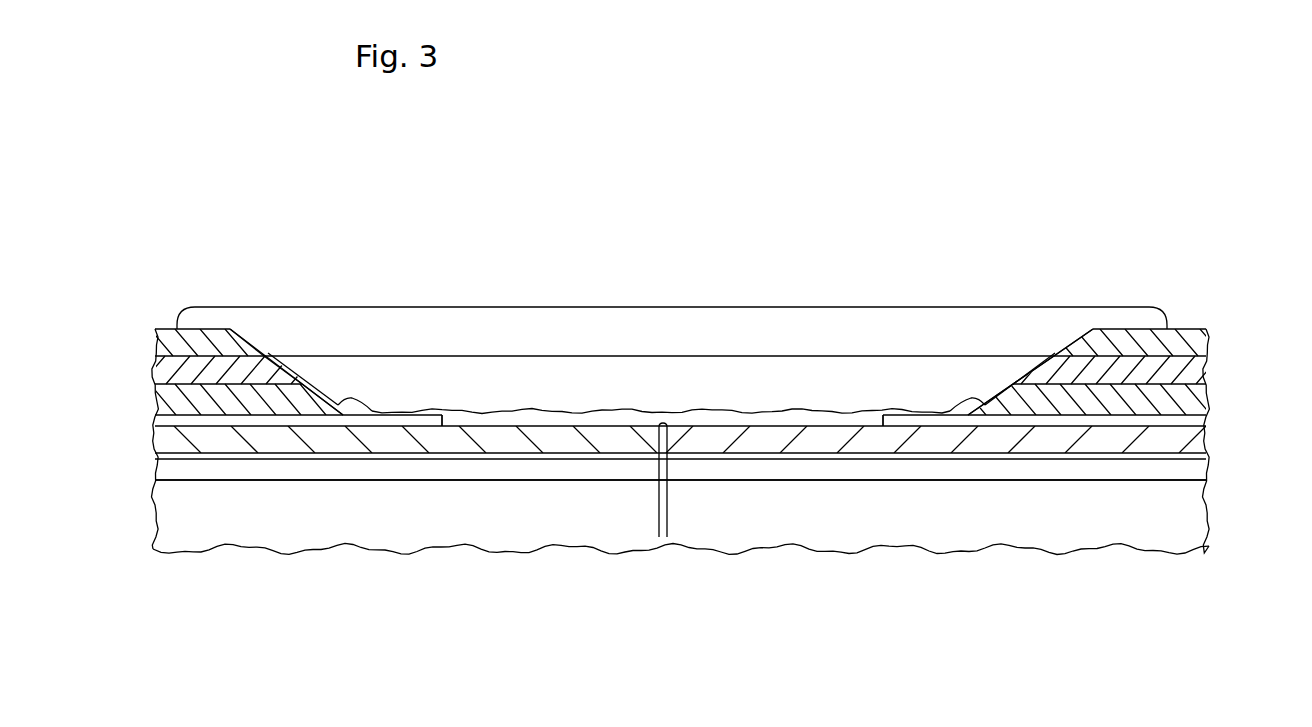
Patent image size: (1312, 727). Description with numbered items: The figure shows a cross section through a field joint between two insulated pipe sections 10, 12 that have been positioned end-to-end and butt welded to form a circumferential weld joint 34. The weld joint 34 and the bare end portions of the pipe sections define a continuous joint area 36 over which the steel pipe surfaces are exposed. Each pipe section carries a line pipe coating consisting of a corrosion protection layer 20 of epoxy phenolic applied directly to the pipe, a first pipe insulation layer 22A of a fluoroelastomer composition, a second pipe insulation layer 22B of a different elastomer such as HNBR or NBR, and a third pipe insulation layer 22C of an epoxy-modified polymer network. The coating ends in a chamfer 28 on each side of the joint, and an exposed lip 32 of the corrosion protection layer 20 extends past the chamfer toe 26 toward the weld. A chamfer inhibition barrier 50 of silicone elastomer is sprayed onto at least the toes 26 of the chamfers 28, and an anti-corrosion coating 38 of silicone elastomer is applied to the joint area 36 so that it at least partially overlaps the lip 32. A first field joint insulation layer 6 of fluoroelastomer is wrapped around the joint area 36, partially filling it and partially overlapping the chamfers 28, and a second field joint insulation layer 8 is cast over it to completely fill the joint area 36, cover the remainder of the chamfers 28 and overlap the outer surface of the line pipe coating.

The first field joint insulation layer 6 is at (726, 399).
The second field joint insulation layer 8 is at (739, 342).
The insulated pipe section 10 is at (428, 523).
The insulated pipe section 12 is at (873, 515).
The corrosion protection layer 20 is at (158, 427).
The first pipe insulation layer 22A is at (158, 400).
The second pipe insulation layer 22B is at (157, 368).
The third pipe insulation layer 22C is at (157, 337).
The chamfer toe 26 is at (362, 401).
The chamfer 28 is at (283, 363).
The exposed lip 32 is at (440, 414).
The weld joint 34 is at (663, 513).
The joint area 36 is at (695, 306).
The anti-corrosion coating 38 is at (566, 411).
The chamfer inhibition barrier 50 is at (268, 353).